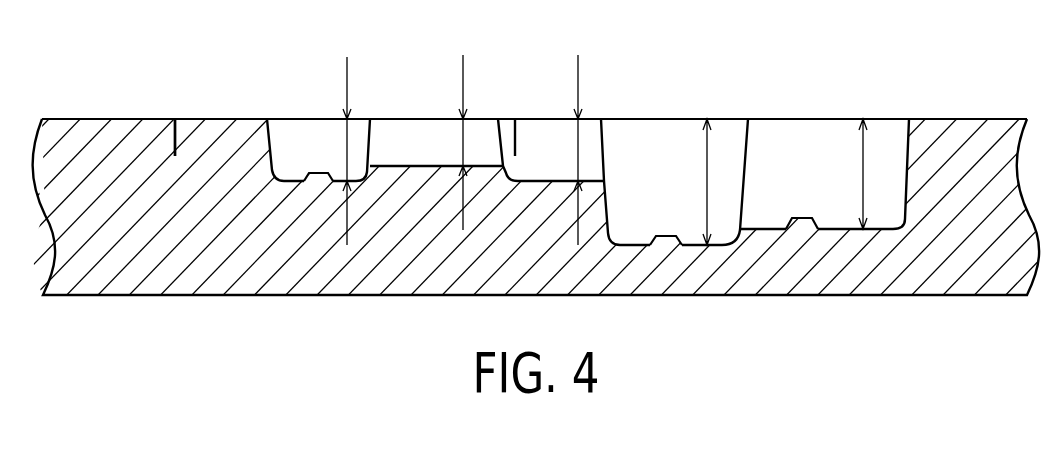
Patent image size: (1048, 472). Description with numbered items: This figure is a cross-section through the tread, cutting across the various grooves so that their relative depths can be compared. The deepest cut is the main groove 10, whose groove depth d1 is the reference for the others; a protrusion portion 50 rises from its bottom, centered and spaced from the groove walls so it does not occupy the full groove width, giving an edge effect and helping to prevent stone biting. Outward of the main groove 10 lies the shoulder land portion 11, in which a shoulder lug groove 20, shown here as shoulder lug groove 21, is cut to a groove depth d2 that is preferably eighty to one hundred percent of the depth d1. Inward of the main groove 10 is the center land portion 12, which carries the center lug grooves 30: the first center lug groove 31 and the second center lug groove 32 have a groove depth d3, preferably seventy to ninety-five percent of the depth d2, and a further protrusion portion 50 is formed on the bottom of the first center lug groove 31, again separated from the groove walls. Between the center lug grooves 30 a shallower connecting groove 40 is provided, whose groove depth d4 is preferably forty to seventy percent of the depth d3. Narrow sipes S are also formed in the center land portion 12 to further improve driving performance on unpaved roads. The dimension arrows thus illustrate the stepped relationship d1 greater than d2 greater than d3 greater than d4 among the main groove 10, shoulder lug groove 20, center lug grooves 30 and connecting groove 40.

The main groove 10 is at (679, 143).
The shoulder land portion 11 is at (977, 119).
The center land portion 12 is at (219, 119).
The shoulder lug groove 20 is at (824, 139).
The second trench portion 21 is at (817, 135).
The center lug groove 30 is at (435, 106).
The first center lug groove 31 is at (318, 150).
The second center lug groove 32 is at (551, 150).
The connecting groove 40 is at (436, 99).
The protrusion portion 50 is at (318, 172).
The sipe S is at (175, 119).
The groove depth of main groove d1 is at (725, 130).
The groove depth of shoulder lug groove d2 is at (882, 130).
The groove depth of center lug groove d3 is at (352, 127).
The groove depth of connecting groove d4 is at (475, 127).